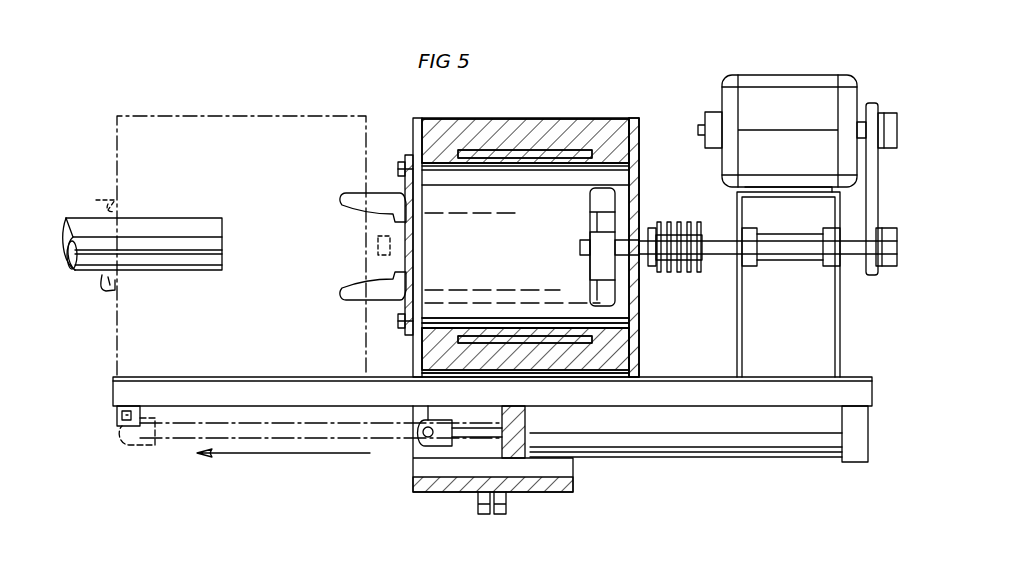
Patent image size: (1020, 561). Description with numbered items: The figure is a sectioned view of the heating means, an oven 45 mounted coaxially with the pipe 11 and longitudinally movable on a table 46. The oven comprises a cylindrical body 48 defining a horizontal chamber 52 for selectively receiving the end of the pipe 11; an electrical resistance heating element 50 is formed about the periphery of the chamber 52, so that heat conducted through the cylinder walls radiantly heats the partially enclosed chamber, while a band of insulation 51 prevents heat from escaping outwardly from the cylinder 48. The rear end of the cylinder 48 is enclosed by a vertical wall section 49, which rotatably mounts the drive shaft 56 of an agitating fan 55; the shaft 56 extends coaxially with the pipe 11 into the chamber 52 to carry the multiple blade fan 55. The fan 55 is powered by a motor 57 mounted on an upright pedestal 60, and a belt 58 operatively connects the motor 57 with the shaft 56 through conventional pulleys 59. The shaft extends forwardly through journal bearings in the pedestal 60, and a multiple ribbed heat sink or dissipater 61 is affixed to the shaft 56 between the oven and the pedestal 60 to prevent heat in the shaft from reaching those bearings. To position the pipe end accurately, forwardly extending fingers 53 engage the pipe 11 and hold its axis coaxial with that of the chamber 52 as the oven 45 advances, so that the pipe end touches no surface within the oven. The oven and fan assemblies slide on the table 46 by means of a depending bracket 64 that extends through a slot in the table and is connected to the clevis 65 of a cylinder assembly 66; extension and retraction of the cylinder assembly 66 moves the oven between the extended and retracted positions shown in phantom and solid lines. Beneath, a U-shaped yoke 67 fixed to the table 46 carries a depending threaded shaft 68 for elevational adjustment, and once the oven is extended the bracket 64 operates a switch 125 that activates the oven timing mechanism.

The pipe 11 is at (248, 212).
The oven 45 is at (583, 116).
The table 46 is at (698, 400).
The cylindrical body 48 is at (632, 332).
The vertical wall section 49 is at (632, 306).
The electrical resistance heating element 50 is at (508, 328).
The band of insulation 51 is at (632, 148).
The horizontal chamber 52 is at (488, 262).
The fingers 53 is at (362, 262).
The agitating fan 55 is at (590, 262).
The drive shaft 56 is at (800, 260).
The motor 57 is at (736, 100).
The belt 58 is at (878, 203).
The pulleys 59 is at (888, 112).
The upright pedestal 60 is at (737, 206).
The heat sink or dissipater 61 is at (690, 274).
The depending bracket 64 is at (428, 412).
The clevis 65 is at (444, 436).
The cylinder assembly 66 is at (672, 452).
The U-shaped yoke 67 is at (546, 492).
The threaded shaft 68 is at (478, 508).
The switch 125 is at (140, 410).